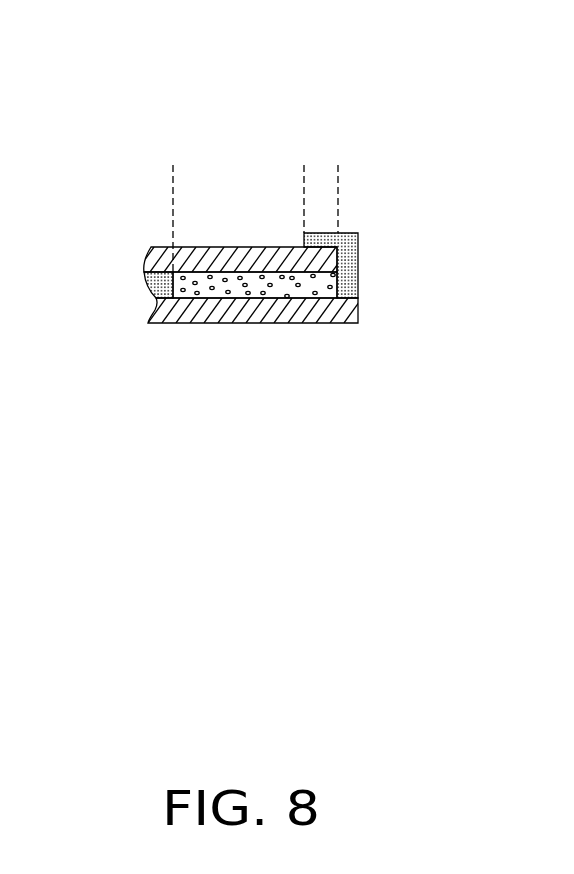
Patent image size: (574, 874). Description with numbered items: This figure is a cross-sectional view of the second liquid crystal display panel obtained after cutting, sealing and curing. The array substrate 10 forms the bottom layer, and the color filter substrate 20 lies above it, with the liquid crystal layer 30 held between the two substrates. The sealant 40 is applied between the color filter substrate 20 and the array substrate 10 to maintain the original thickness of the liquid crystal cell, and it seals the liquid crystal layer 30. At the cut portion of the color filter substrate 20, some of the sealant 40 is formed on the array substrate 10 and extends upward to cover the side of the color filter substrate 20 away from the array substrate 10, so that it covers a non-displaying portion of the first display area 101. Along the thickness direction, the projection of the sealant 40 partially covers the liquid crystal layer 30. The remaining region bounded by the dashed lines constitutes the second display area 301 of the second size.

The first display area 101 is at (277, 110).
The second display area 301 is at (259, 234).
The array substrate 10 is at (187, 302).
The color filter substrate 20 is at (160, 265).
The liquid crystal layer 30 is at (232, 292).
The sealant 40 is at (145, 282).